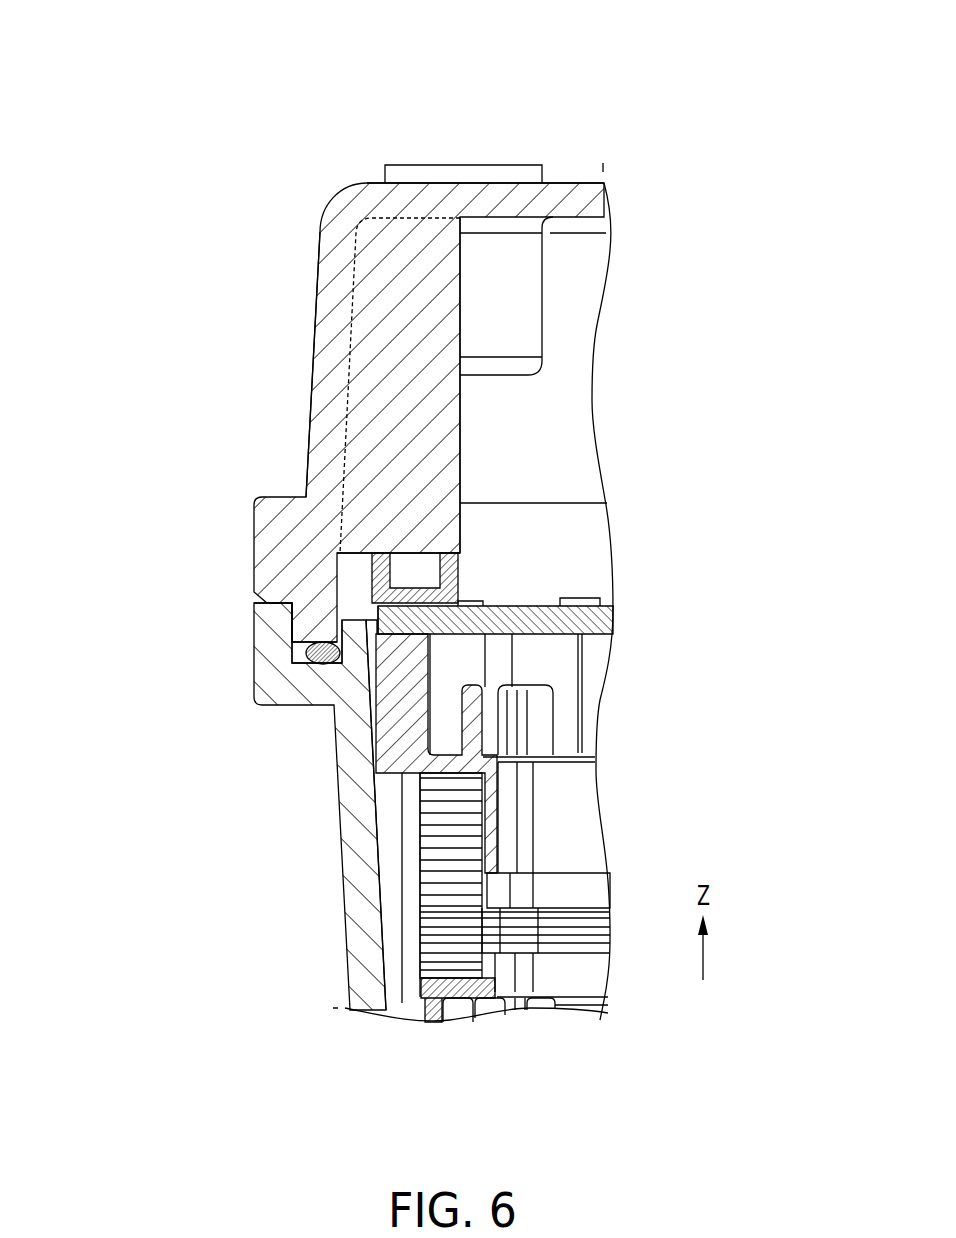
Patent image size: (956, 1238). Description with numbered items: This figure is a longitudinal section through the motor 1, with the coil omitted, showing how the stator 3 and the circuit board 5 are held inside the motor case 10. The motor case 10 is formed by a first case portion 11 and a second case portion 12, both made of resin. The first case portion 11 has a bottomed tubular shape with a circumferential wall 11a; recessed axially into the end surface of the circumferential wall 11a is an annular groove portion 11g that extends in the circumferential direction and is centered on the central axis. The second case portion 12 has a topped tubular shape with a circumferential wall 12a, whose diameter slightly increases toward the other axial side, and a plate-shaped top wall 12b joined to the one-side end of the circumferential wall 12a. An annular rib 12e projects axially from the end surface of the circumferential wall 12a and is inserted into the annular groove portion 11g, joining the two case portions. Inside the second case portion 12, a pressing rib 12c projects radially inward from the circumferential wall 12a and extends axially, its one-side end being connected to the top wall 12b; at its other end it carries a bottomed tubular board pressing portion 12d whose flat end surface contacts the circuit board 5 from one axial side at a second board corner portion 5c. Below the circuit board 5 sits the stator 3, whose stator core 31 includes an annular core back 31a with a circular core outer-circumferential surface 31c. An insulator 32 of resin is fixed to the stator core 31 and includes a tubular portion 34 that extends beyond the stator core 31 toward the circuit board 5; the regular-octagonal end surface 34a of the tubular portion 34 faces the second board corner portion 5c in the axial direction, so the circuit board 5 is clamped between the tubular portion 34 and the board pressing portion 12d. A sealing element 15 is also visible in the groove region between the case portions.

The motor 1 is at (650, 110).
The motor case 10 is at (328, 181).
The second case portion 12 is at (306, 275).
The circumferential wall 12a is at (322, 352).
The top wall 12b is at (577, 197).
The pressing rib 12c is at (447, 468).
The board pressing portion 12d is at (458, 580).
The annular rib 12e is at (298, 618).
The circuit board 5 is at (598, 619).
The second board corner portion 5c is at (417, 597).
The end surface 34a is at (378, 612).
The seal ring 15 is at (310, 653).
The first case portion 11 is at (328, 877).
The circumferential wall 11a is at (342, 766).
The annular groove portion 11g is at (297, 655).
The tubular portion 34 is at (362, 696).
The insulator 32 is at (382, 790).
The stator core 31 is at (396, 959).
The core back 31a is at (432, 923).
The core outer-circumferential surface 31c is at (414, 882).
The stator 3 is at (545, 988).